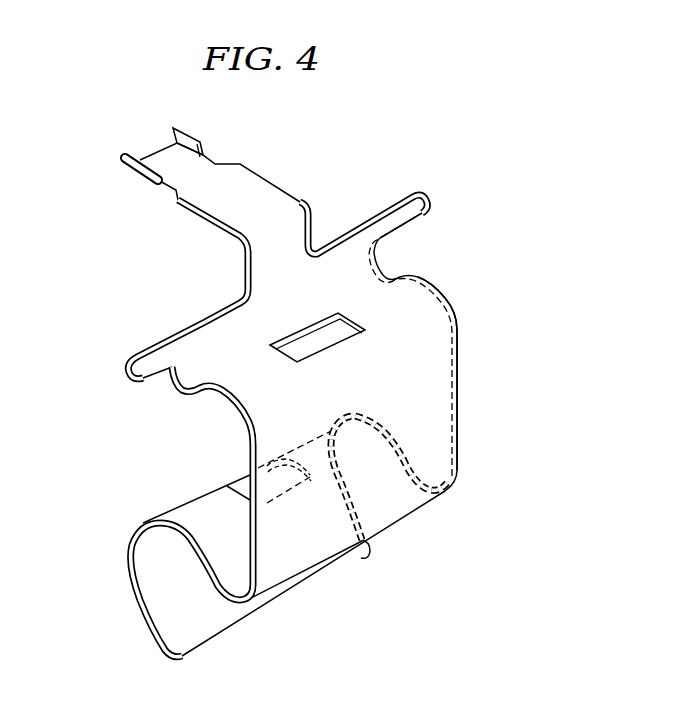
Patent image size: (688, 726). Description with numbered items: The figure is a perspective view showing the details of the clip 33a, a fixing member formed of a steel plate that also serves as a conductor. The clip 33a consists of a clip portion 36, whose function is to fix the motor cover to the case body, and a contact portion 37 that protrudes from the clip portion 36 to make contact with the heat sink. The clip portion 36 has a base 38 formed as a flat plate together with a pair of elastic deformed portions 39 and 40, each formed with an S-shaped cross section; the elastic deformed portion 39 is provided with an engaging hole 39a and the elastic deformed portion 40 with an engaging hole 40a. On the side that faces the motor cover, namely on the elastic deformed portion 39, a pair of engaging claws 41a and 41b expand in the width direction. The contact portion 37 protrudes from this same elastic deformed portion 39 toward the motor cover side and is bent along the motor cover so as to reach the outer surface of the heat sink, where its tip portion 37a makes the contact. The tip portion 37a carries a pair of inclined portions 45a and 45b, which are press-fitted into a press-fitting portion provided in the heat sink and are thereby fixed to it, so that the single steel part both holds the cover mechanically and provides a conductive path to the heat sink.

The clip 33a is at (461, 253).
The clip portion 36 is at (459, 439).
The contact portion 37 is at (274, 180).
The tip portion 37a is at (175, 170).
The base 38 is at (422, 383).
The elastic deformed portion 39 is at (412, 295).
The engaging hole 39a is at (283, 347).
The elastic deformed portion 40 is at (211, 536).
The engaging hole 40a is at (238, 476).
The engaging claw 41a is at (128, 368).
The engaging claw 41b is at (427, 213).
The inclined portion 45a is at (137, 177).
The inclined portion 45b is at (193, 141).